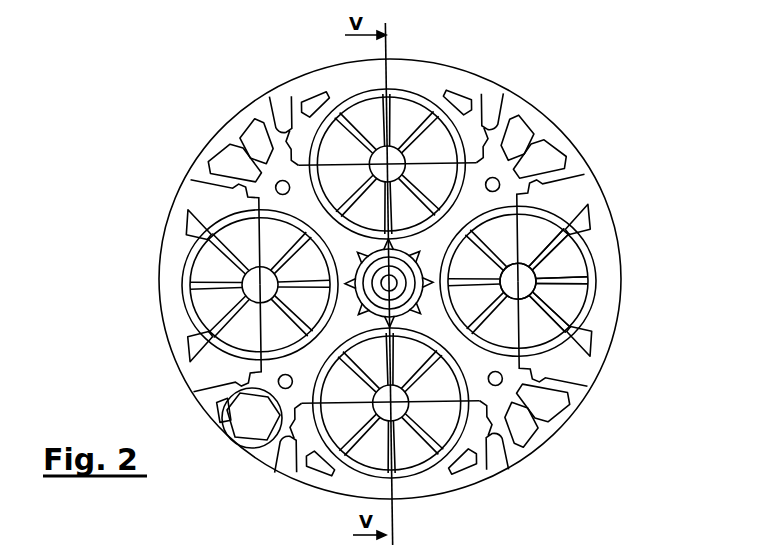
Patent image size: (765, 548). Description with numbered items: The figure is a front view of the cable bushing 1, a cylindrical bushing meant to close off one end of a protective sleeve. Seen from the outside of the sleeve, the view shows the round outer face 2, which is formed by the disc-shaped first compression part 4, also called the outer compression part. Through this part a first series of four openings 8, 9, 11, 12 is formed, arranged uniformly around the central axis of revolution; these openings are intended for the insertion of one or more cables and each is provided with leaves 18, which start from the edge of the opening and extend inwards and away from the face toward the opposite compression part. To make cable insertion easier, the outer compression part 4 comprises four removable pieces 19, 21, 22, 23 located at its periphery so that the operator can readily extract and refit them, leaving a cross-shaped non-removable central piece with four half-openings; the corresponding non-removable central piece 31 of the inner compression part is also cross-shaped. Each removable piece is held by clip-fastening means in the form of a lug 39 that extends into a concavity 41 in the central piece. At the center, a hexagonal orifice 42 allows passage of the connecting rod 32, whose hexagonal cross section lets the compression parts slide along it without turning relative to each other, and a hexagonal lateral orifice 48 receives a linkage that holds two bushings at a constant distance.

The cable bushing 1 is at (150, 160).
The round outer face 2 is at (574, 167).
The first compression part 4 is at (231, 140).
The opening 8 is at (460, 467).
The opening 9 is at (579, 281).
The opening 11 is at (442, 92).
The opening 12 is at (201, 225).
The leaves 18 is at (541, 328).
The removable piece 19 is at (344, 483).
The removable piece 21 is at (603, 233).
The removable piece 22 is at (352, 78).
The removable piece 23 is at (180, 323).
The non-removable central piece 31 is at (598, 372).
The connecting rod 32 is at (542, 261).
The lug 39 is at (271, 100).
The concavity 41 is at (251, 122).
The hexagonal orifice 42 is at (543, 300).
The lateral orifice 48 is at (252, 420).